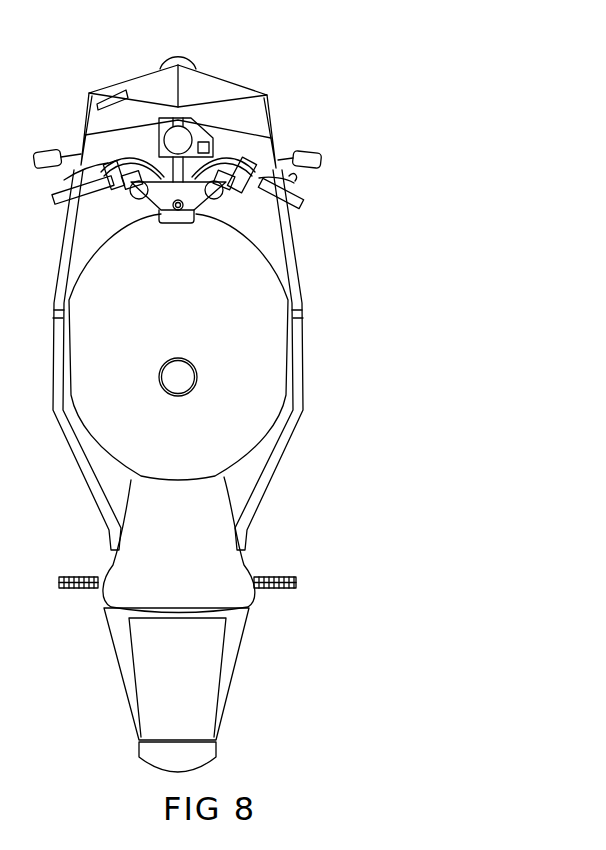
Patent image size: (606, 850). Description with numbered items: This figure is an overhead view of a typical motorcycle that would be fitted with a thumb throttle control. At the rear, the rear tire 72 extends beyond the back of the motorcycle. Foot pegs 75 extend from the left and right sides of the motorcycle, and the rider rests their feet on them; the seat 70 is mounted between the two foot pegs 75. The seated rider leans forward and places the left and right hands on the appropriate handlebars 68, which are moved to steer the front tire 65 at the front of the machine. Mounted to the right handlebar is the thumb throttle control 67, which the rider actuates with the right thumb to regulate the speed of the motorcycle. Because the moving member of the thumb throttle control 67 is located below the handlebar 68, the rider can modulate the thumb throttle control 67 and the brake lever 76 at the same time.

The front tire 65 is at (187, 62).
The brake lever 76 is at (268, 160).
The thumb throttle control 67 is at (280, 188).
The handlebars 68 is at (295, 207).
The seat 70 is at (188, 507).
The foot pegs 75 is at (95, 577).
The rear tire 72 is at (183, 755).